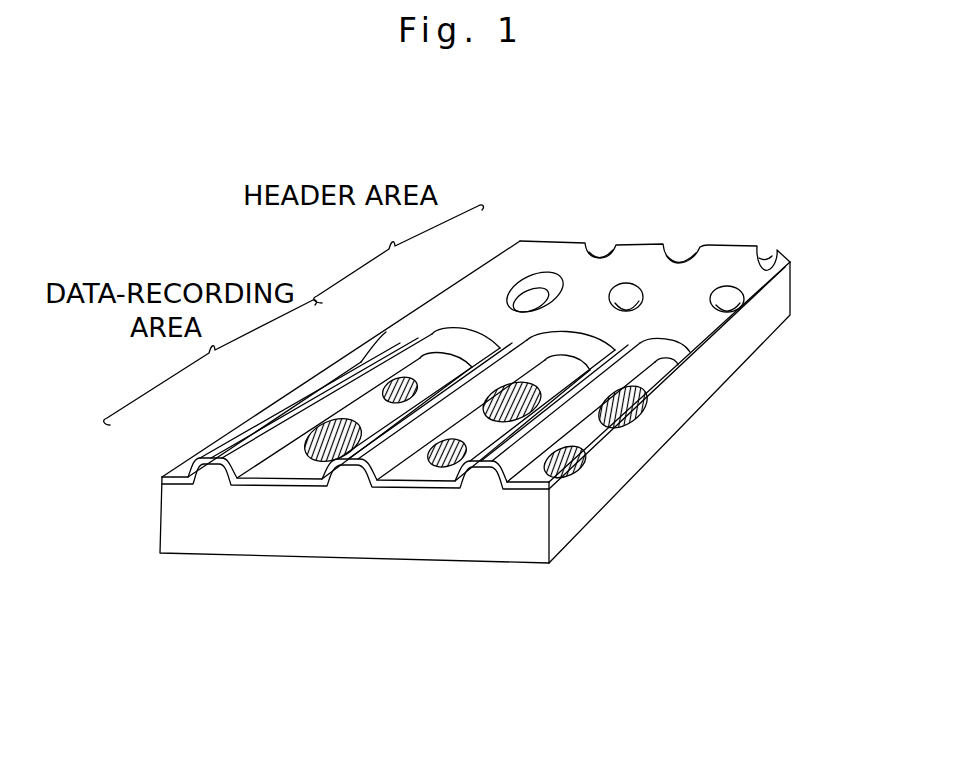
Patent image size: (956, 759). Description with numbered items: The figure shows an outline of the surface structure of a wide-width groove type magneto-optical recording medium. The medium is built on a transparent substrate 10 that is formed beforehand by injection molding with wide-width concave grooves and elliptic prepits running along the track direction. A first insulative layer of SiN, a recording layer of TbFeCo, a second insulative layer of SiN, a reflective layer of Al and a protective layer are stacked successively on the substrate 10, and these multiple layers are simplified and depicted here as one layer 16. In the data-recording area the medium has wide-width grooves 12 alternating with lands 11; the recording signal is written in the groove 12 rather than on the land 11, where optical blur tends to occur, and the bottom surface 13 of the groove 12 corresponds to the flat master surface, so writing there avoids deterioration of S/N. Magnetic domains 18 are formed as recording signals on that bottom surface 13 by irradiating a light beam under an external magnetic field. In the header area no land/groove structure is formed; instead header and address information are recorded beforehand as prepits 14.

The transparent substrate 10 is at (727, 353).
The land 11 is at (238, 443).
The wide-width groove 12 is at (553, 356).
The bottom surface 13 is at (402, 468).
The prepit 14 is at (628, 284).
The layer 16 is at (670, 373).
The magnetic domain 18 is at (308, 455).